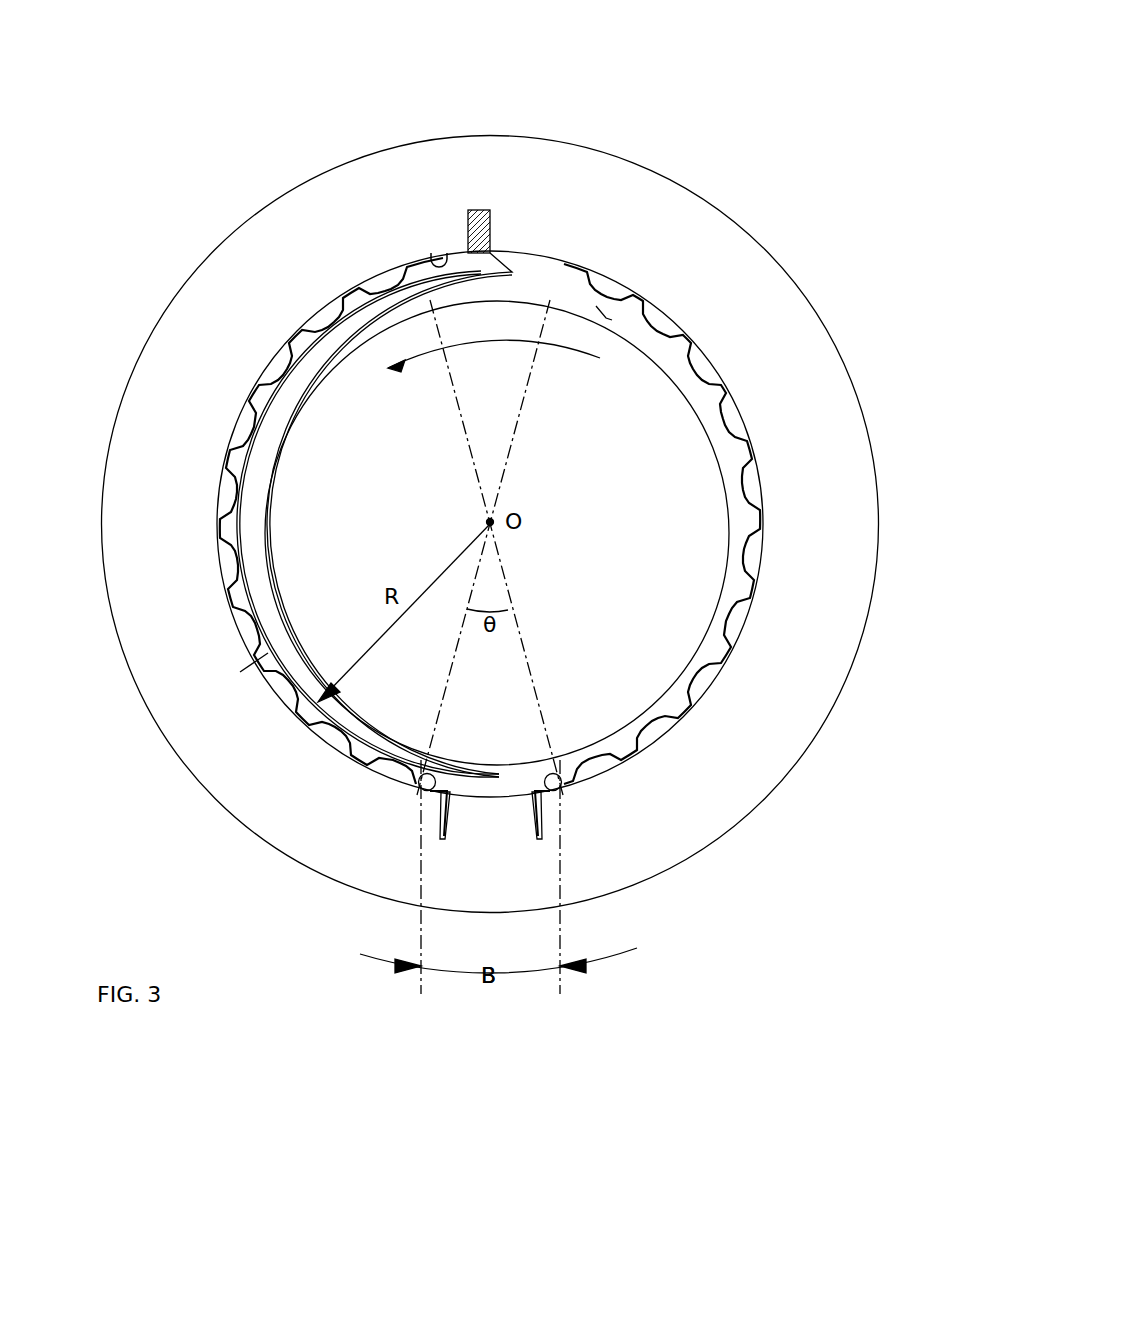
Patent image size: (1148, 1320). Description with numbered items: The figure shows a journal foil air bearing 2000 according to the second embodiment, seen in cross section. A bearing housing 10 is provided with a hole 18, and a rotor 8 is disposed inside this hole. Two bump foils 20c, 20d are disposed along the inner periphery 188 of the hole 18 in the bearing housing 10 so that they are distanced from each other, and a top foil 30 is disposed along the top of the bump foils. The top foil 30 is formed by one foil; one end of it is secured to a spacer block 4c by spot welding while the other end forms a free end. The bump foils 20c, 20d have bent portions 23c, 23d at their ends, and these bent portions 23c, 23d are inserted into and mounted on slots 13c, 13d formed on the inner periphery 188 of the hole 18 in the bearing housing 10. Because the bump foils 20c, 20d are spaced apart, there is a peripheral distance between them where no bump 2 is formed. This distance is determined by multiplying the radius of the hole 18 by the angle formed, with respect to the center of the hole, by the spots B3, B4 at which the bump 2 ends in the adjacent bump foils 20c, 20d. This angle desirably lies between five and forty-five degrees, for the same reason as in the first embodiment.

The journal foil air bearing 2000 is at (223, 92).
The bearing housing 10 is at (591, 170).
The rotor 8 is at (337, 387).
The bump 2 is at (245, 456).
The bump foil 20c is at (727, 665).
The bump foil 20d is at (303, 722).
The inner periphery 188 is at (433, 256).
The spacer block 4c is at (478, 210).
The hole 18 is at (606, 316).
The top foil 30 is at (268, 653).
The slot 13c is at (540, 840).
The slot 13d is at (443, 840).
The bent portion 23c is at (560, 795).
The bent portion 23d is at (425, 795).
The spot at which the bump ends B3 is at (560, 786).
The spot at which the bump ends B4 is at (420, 786).